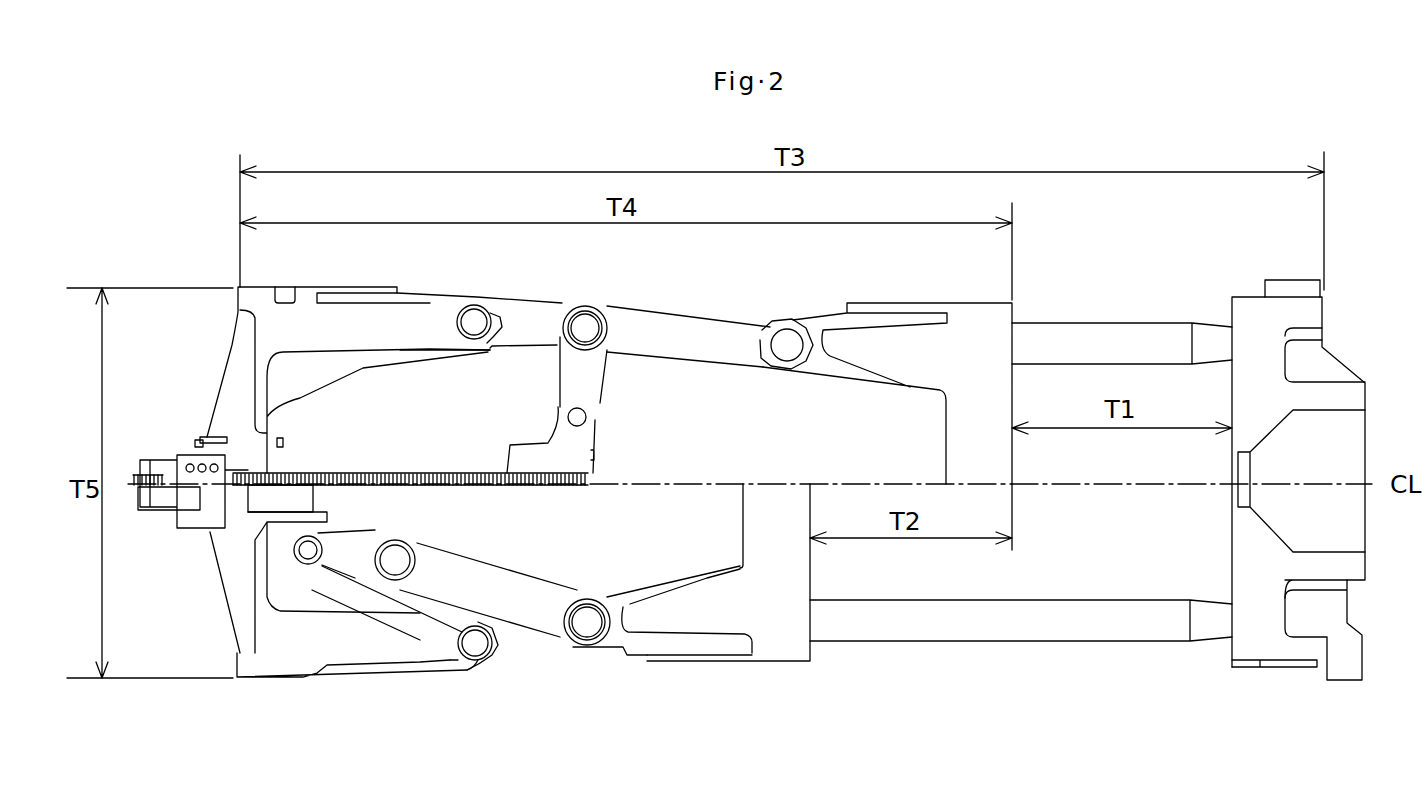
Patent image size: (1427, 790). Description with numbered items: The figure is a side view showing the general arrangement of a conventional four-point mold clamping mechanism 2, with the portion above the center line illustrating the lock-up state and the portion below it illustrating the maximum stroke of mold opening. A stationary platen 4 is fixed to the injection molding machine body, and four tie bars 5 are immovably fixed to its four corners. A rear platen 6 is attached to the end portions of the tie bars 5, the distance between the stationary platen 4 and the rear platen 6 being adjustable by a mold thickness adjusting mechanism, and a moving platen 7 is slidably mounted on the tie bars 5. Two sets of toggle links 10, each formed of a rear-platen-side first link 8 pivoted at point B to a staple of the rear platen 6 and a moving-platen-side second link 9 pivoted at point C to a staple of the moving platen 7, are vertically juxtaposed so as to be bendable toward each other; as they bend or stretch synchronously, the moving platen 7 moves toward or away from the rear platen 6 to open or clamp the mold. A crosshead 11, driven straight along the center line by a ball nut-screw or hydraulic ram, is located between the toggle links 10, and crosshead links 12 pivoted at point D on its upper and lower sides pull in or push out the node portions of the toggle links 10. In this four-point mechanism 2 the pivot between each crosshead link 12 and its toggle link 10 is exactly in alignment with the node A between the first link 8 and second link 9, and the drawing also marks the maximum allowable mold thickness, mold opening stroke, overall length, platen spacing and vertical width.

The four-point mold clamping mechanism 2 is at (1375, 382).
The stationary platen 4 is at (1293, 647).
The tie bars 5 is at (1130, 330).
The rear platen 6 is at (290, 665).
The moving platen 7 is at (975, 330).
The first link 8 is at (540, 300).
The second link 9 is at (680, 322).
The toggle links 10 is at (621, 266).
The crosshead 11 is at (583, 465).
The crosshead links 12 is at (562, 372).